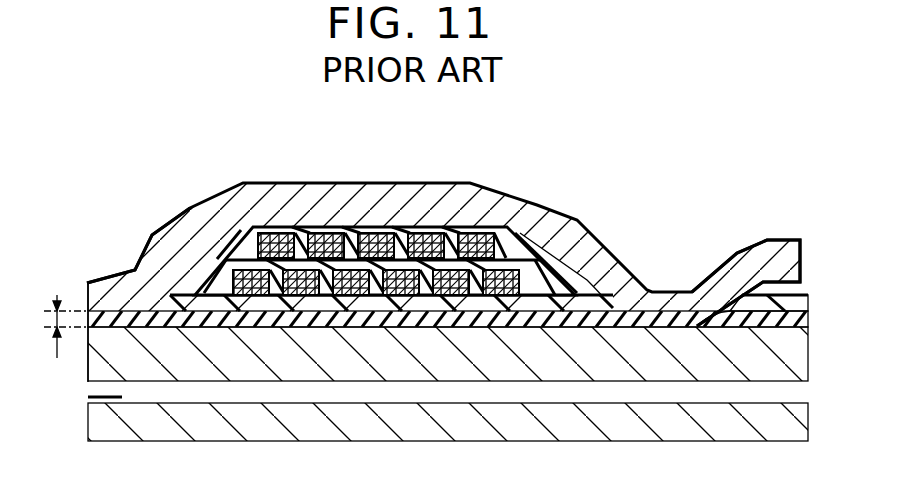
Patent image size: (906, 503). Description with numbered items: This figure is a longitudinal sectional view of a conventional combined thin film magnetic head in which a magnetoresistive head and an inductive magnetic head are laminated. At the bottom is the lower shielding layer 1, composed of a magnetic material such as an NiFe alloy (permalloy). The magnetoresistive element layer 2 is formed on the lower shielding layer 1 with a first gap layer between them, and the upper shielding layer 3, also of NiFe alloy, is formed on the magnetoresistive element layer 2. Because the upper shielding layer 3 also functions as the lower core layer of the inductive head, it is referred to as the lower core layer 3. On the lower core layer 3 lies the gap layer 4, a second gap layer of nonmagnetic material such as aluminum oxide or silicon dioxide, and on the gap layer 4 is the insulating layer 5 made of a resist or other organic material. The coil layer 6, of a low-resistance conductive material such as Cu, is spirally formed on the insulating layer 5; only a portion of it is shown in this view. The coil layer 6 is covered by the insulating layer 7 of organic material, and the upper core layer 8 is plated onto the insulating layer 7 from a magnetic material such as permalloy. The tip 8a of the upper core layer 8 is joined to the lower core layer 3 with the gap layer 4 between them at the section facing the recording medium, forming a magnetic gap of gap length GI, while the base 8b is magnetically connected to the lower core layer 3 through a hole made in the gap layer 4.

The lower shielding layer 1 is at (787, 421).
The magnetoresistive element layer 2 is at (88, 397).
The upper shielding layer 3 is at (760, 358).
The gap layer 4 is at (324, 318).
The insulating layer 5 is at (194, 292).
The coil layer 6 is at (484, 236).
The insulating layer 7 is at (257, 255).
The upper core layer 8 is at (387, 210).
The tip of the upper core layer 8a is at (113, 297).
The base of the upper core layer 8b is at (673, 313).
The gap length GI is at (55, 321).